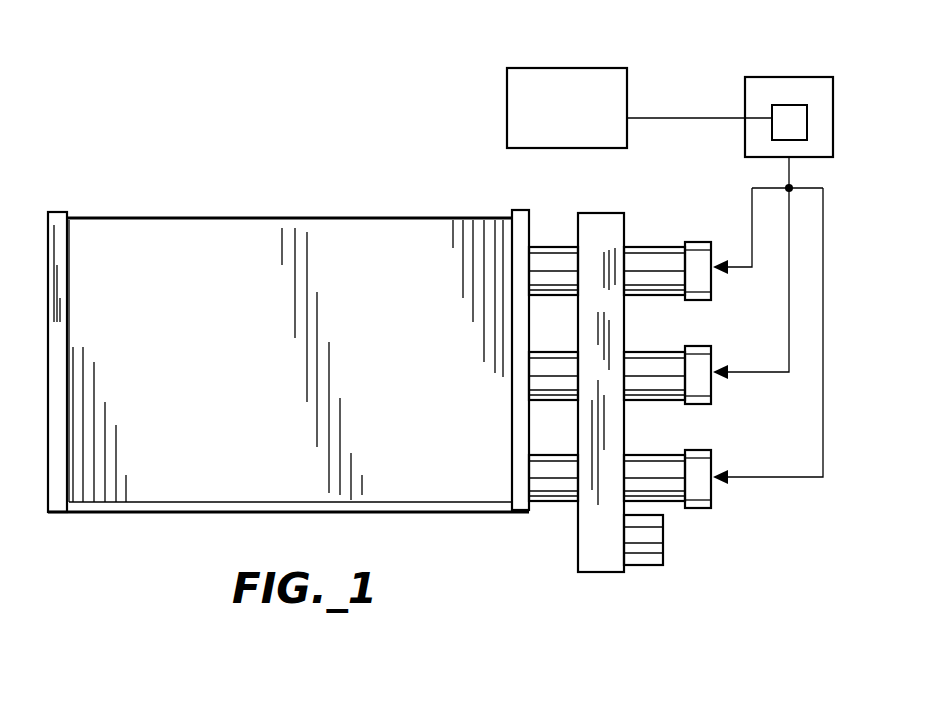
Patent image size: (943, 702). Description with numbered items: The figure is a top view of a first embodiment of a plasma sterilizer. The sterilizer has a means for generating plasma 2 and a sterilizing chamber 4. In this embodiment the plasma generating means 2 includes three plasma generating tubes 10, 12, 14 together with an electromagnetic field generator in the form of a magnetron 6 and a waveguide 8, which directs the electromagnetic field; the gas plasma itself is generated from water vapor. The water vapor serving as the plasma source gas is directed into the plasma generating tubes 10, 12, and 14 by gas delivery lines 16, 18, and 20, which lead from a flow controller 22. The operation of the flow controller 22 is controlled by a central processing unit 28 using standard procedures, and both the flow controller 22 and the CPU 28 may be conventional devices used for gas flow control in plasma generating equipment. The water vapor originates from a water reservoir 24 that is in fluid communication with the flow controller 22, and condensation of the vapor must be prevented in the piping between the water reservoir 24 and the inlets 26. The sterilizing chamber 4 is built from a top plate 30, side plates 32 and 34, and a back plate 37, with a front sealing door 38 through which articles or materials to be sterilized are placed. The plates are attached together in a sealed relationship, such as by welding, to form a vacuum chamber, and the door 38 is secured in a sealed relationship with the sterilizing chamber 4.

The means for generating plasma 2 is at (648, 188).
The sterilizing chamber 4 is at (341, 166).
The magnetron 6 is at (663, 537).
The waveguide 8 is at (578, 542).
The plasma generating tube 10 is at (647, 245).
The plasma generating tube 12 is at (647, 350).
The plasma generating tube 14 is at (647, 455).
The gas delivery line 16 is at (731, 271).
The gas delivery line 18 is at (731, 376).
The gas delivery line 20 is at (731, 481).
The flow controller 22 is at (772, 112).
The water reservoir 24 is at (768, 77).
The inlet 26 is at (786, 165).
The central processing unit 28 is at (555, 68).
The top plate 30 is at (220, 240).
The side plate 32 is at (48, 475).
The side plate 34 is at (530, 225).
The back plate 37 is at (117, 217).
The front sealing door 38 is at (437, 513).